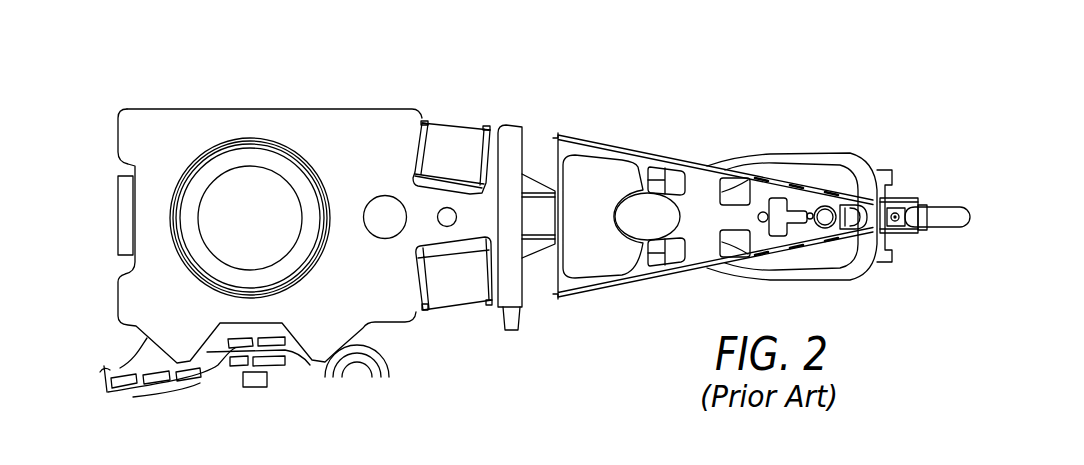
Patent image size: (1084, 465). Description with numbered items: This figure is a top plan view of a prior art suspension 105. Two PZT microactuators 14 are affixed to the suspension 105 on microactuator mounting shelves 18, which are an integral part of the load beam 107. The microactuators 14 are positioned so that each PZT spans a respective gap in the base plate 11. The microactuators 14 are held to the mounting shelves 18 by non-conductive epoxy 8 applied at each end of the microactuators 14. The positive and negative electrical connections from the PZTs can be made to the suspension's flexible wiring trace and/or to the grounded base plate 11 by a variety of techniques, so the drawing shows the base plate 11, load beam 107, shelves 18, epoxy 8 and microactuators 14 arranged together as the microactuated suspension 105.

The non-conductive epoxy 8 is at (423, 121).
The base plate 11 is at (198, 347).
The PZT microactuators 14 is at (447, 137).
The microactuator mounting shelves 18 is at (483, 192).
The suspension 105 is at (548, 94).
The load beam 107 is at (633, 152).